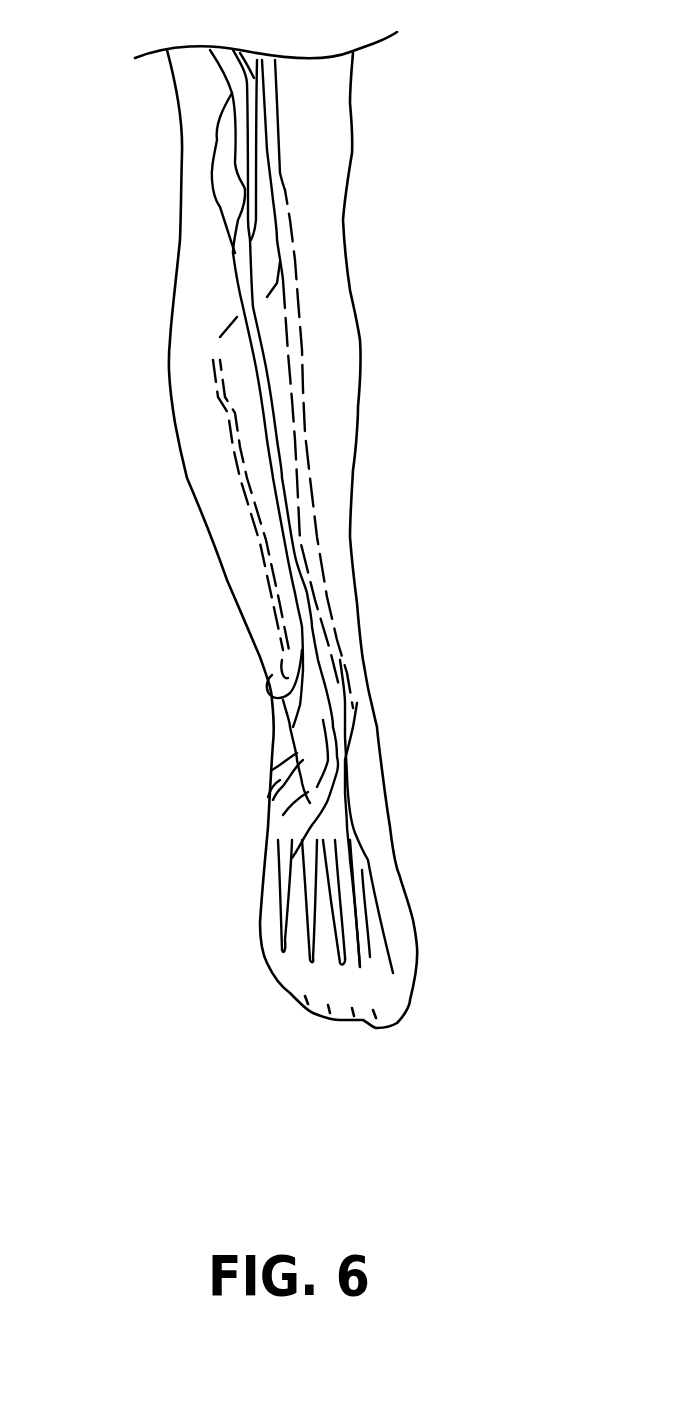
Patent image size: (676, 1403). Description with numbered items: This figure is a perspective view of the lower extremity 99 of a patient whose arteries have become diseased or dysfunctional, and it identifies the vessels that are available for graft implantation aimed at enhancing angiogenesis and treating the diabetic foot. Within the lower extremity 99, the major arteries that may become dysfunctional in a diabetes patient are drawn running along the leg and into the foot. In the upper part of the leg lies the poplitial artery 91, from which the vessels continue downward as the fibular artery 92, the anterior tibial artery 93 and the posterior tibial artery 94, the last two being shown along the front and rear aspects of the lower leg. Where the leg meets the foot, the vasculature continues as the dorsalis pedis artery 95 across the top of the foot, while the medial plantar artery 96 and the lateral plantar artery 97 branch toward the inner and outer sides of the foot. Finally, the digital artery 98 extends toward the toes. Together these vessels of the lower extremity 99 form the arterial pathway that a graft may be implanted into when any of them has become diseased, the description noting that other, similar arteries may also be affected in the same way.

The poplitial artery 91 is at (230, 98).
The fibular artery 92 is at (233, 292).
The anterior tibial artery 93 is at (250, 410).
The posterior tibial artery 94 is at (310, 403).
The dorsalis pedis artery 95 is at (337, 707).
The medial plantar artery 96 is at (363, 732).
The lateral plantar artery 97 is at (280, 797).
The digital artery 98 is at (387, 882).
The lower extremity 99 is at (416, 300).